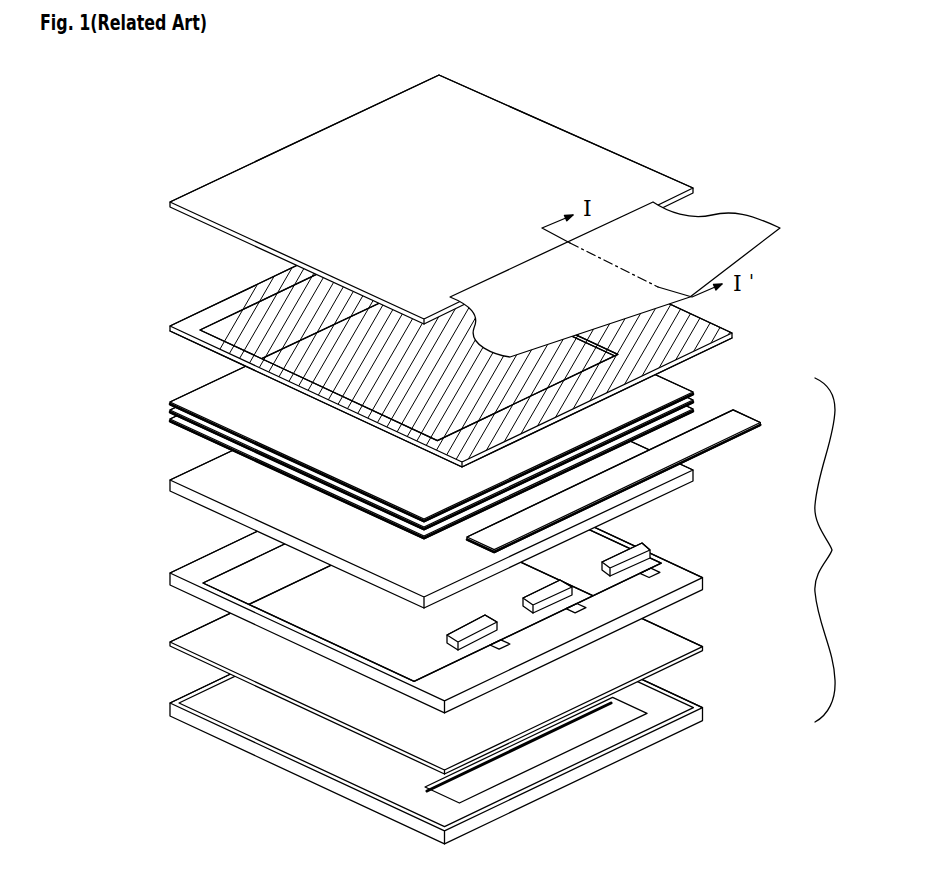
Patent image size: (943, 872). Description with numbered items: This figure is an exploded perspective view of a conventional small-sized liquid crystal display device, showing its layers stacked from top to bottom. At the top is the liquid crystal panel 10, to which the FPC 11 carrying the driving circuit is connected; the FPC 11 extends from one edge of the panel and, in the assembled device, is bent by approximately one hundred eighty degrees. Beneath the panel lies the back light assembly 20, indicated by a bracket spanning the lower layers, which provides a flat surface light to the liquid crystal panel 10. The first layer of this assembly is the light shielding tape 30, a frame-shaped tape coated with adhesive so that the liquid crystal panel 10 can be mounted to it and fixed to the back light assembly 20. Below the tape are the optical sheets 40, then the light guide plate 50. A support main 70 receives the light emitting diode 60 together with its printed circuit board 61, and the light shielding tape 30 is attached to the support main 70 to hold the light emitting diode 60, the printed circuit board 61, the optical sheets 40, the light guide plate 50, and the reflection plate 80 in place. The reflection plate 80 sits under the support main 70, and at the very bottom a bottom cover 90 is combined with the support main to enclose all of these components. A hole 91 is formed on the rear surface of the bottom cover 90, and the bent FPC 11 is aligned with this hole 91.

The liquid crystal panel 10 is at (623, 170).
The FPC 11 is at (750, 221).
The back light assembly 20 is at (838, 550).
The light shielding tape 30 is at (710, 333).
The optical sheets 40 is at (692, 412).
The light guide plate 50 is at (697, 481).
The light emitting diode 60 is at (643, 544).
The printed circuit board 61 is at (750, 423).
The support main 70 is at (687, 578).
The reflection plate 80 is at (687, 639).
The bottom cover 90 is at (451, 712).
The hole 91 is at (571, 746).